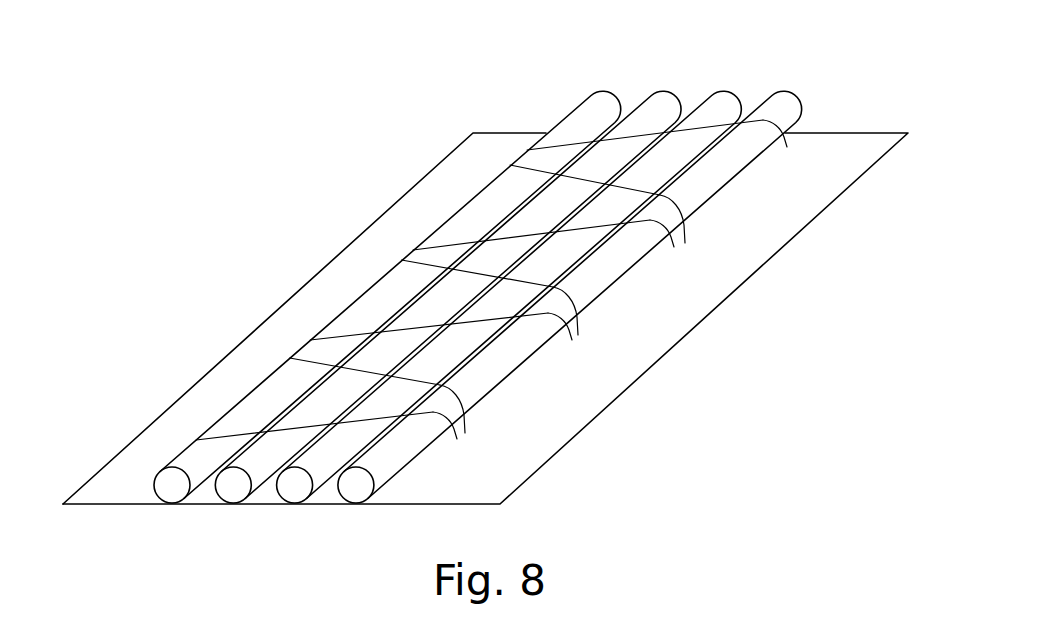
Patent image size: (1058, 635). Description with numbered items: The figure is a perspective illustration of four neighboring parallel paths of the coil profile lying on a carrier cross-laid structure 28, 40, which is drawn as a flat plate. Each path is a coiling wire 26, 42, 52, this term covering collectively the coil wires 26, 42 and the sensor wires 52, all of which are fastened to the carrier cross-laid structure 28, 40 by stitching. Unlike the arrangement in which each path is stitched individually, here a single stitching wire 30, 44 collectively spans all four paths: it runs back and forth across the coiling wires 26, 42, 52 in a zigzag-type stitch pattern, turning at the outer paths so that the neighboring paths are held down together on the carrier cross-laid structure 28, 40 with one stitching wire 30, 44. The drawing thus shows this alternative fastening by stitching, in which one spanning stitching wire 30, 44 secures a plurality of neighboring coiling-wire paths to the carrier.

The coil wire 26 is at (848, 37).
The coil wire 42 is at (478, 297).
The sensor wire 52 is at (478, 297).
The carrier cross-laid structure 28 is at (762, 252).
The carrier cross-laid structure 40 is at (485, 267).
The stitching wire 30 is at (500, 131).
The stitching wire 44 is at (485, 318).